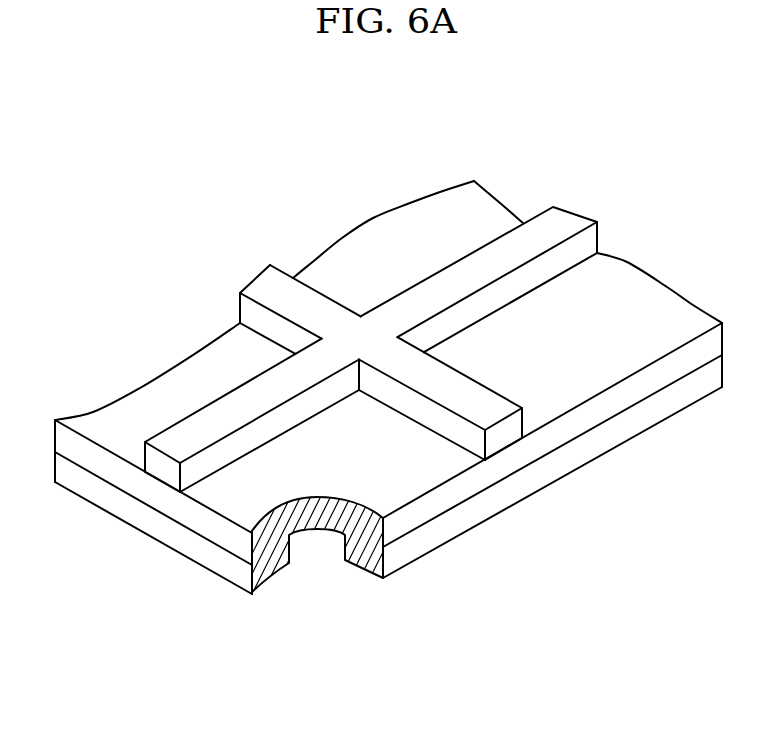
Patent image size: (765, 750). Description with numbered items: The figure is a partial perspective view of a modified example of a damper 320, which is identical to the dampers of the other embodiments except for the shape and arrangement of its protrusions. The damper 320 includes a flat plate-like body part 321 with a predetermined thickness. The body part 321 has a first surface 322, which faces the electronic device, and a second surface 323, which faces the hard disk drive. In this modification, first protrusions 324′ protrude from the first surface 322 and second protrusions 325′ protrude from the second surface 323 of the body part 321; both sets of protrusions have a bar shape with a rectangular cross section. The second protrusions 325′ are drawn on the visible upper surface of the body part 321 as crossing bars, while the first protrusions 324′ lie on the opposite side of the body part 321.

The damper 320 is at (182, 282).
The body part 321 is at (150, 488).
The first surface 322 is at (313, 528).
The second surface 323 is at (147, 408).
The first protrusions 324′ is at (185, 543).
The second protrusions 325′ is at (293, 300).